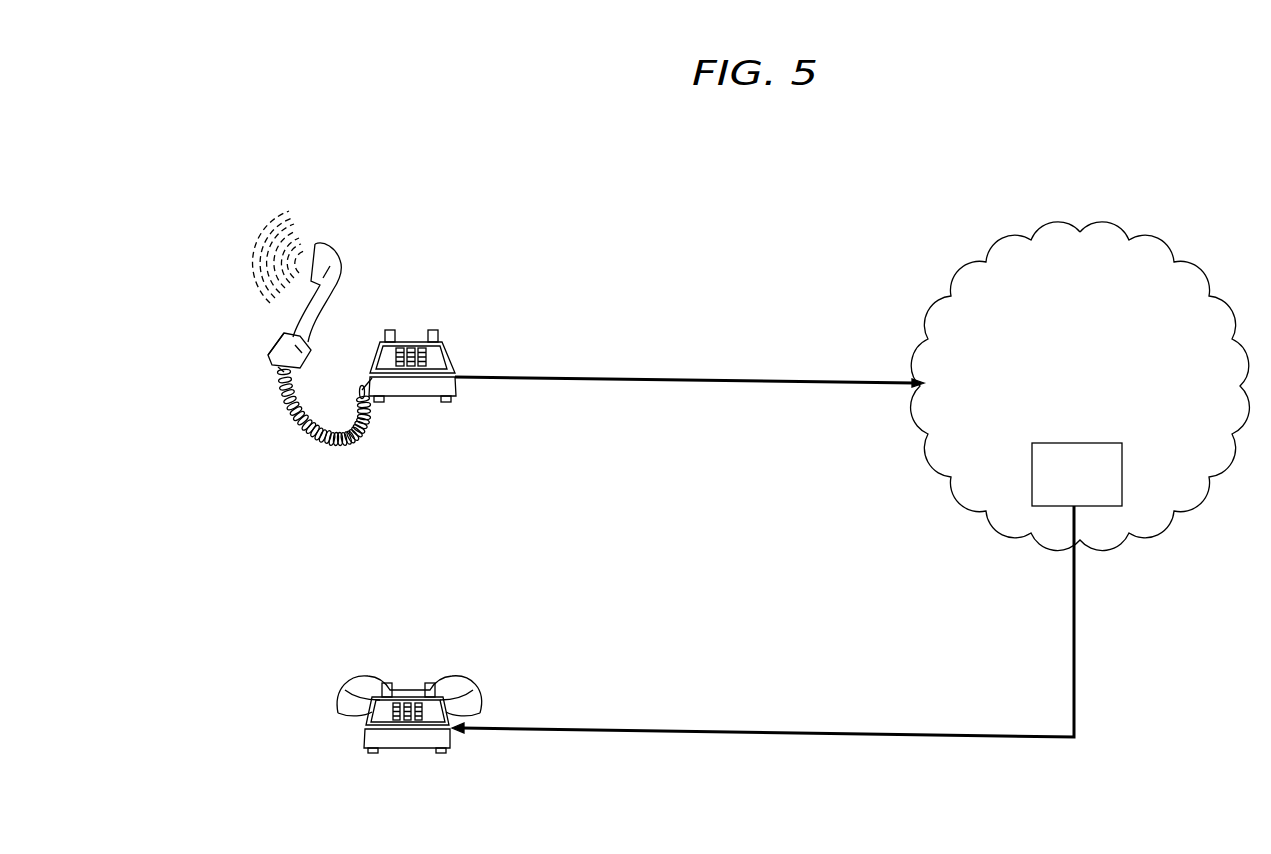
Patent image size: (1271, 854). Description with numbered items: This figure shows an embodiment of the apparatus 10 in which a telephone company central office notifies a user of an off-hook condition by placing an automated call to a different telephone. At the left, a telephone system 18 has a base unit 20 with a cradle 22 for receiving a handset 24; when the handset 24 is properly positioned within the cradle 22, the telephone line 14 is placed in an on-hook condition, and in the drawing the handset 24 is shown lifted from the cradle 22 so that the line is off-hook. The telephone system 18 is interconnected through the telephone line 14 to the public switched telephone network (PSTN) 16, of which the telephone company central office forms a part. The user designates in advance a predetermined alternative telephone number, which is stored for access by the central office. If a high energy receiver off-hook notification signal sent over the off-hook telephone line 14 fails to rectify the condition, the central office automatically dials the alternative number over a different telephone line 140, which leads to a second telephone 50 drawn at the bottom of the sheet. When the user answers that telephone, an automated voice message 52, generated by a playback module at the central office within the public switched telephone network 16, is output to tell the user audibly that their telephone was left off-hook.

The apparatus 10 is at (849, 212).
The telephone line 14 is at (688, 380).
The public switched telephone network (PSTN) 16 is at (1070, 220).
The telephone system 18 is at (412, 304).
The base unit 20 is at (457, 387).
The cradle 22 is at (439, 333).
The handset 24 is at (273, 346).
The destination telephone 50 is at (450, 738).
The automated voice message 52 is at (1122, 475).
The different telephone line 140 is at (760, 731).